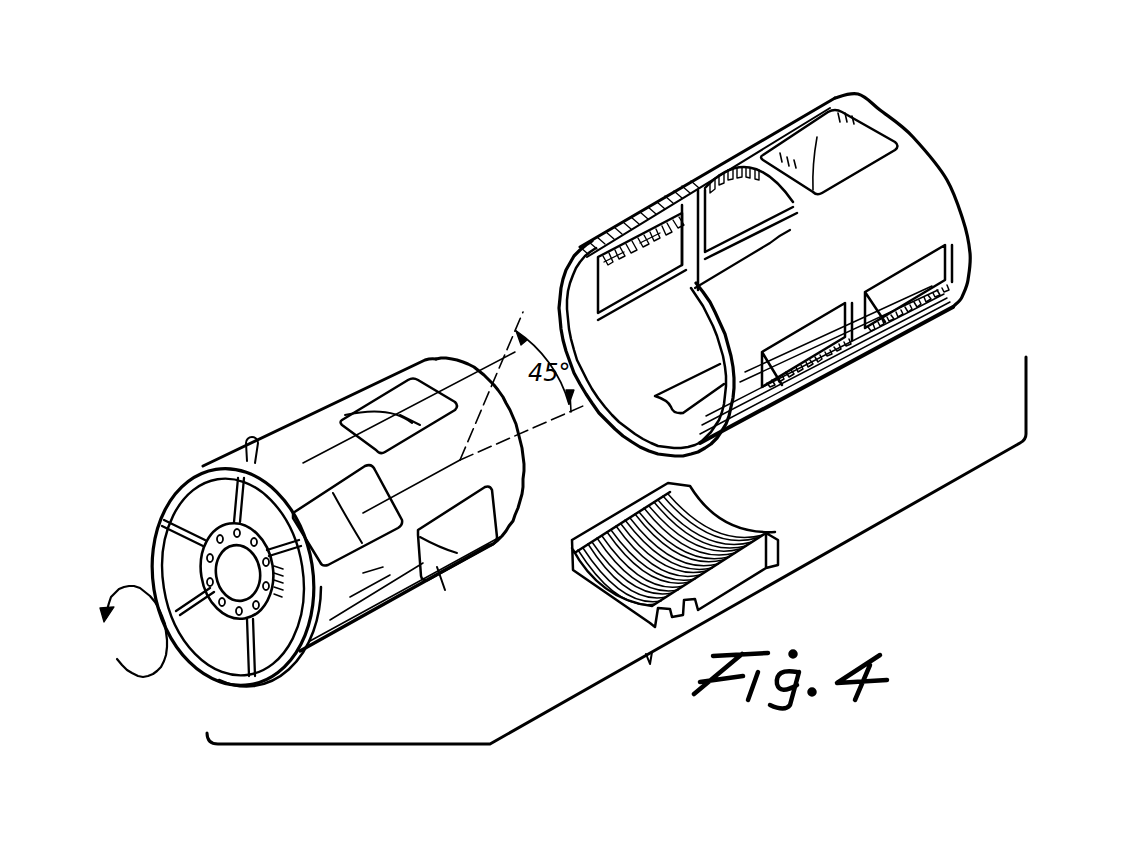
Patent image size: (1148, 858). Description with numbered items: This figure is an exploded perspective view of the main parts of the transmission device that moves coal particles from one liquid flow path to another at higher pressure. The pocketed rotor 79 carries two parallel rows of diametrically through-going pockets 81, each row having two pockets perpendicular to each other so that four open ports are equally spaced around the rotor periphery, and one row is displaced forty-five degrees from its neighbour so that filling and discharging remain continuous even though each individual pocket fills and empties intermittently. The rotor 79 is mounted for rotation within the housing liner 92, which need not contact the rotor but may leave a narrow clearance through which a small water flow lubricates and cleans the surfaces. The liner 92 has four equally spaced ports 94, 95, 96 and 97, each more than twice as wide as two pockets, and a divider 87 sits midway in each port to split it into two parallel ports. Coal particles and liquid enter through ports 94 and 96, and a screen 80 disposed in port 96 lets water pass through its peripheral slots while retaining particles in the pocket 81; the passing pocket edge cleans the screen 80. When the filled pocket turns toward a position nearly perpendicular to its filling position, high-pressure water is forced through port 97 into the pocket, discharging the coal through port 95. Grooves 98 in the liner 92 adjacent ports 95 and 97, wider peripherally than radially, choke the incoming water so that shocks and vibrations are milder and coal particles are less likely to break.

The pocketed rotor 79 is at (309, 410).
The pockets 81 is at (413, 403).
The housing liner 92 is at (937, 156).
The port 94 is at (753, 170).
The port 97 is at (606, 246).
The divider 87 is at (853, 320).
The grooves 98 is at (917, 287).
The port 95 is at (900, 333).
The port 96 is at (672, 408).
The screen 80 is at (617, 598).